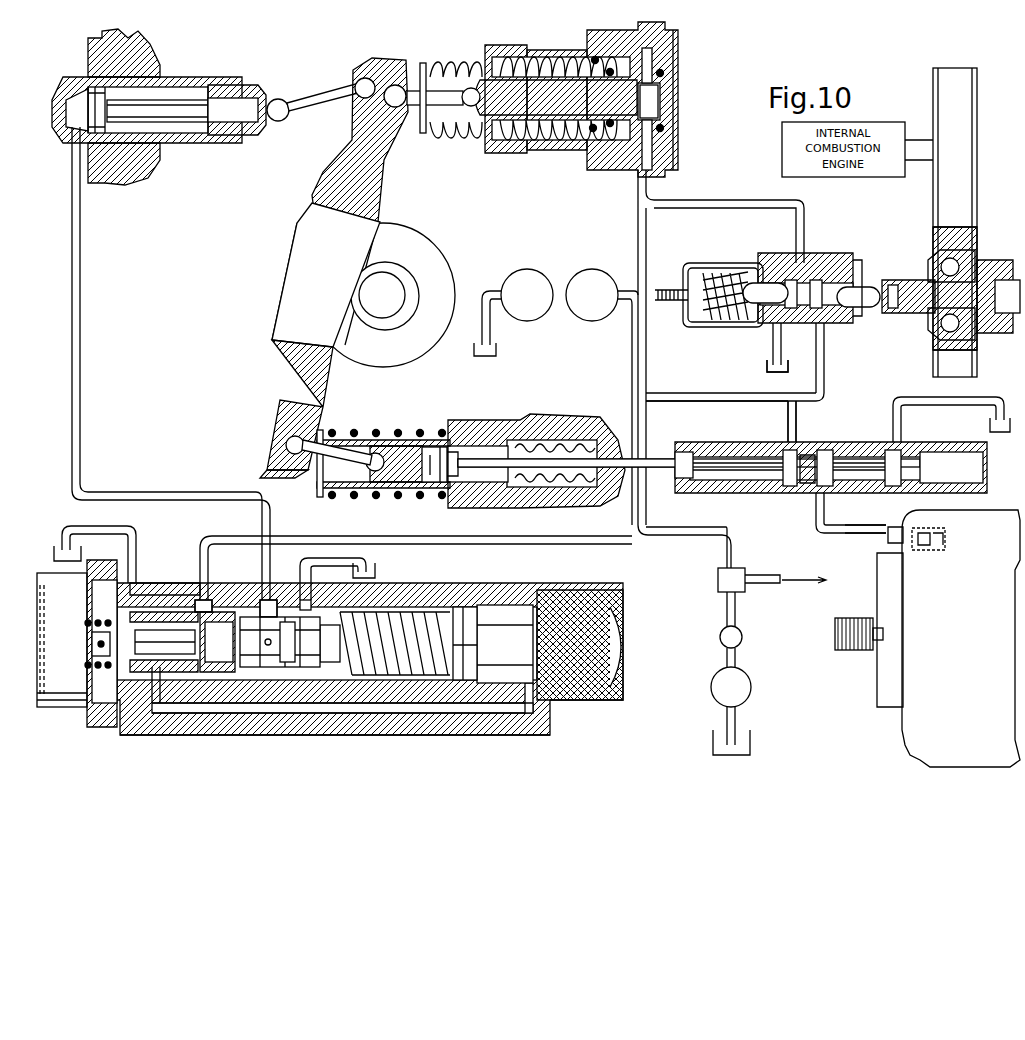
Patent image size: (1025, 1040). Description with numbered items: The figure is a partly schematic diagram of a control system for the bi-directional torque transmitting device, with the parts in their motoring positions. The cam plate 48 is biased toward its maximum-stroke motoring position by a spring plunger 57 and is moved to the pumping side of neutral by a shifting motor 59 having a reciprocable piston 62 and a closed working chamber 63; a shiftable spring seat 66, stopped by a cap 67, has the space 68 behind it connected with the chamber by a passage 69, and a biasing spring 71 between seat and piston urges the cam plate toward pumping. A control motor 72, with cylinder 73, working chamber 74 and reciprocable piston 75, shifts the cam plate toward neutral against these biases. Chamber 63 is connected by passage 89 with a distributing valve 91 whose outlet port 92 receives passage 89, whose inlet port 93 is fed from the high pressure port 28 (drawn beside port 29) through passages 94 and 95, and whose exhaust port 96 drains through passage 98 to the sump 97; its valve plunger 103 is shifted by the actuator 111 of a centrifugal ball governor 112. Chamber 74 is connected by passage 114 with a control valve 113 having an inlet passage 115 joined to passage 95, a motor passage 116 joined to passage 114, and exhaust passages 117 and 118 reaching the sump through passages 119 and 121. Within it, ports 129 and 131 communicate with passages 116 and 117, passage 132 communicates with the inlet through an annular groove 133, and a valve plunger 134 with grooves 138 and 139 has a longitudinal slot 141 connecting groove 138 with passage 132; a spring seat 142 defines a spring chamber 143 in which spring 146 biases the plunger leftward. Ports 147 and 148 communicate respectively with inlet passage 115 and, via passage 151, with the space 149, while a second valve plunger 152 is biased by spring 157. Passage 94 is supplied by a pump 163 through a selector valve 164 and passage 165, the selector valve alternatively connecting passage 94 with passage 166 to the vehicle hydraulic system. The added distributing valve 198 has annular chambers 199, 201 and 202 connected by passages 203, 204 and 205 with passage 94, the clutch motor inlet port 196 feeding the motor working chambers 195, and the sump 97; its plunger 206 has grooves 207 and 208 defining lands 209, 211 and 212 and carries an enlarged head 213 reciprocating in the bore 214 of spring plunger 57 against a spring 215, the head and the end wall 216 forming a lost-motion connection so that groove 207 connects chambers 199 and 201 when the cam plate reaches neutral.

The high pressure port 28 is at (597, 270).
The accumulator 29 is at (528, 270).
The cam plate 48 is at (266, 375).
The spring plunger 57 is at (372, 488).
The shifting motor 59 is at (540, 57).
The reciprocable piston 62 is at (680, 118).
The motor working chamber 63 is at (660, 98).
The shiftable spring seat 66 is at (575, 150).
The cap 67 is at (500, 153).
The space 68 is at (632, 45).
The passage 69 is at (680, 48).
The biasing spring 71 is at (440, 62).
The control motor 72 is at (178, 77).
The cylinder 73 is at (212, 145).
The working chamber 74 is at (97, 112).
The reciprocable piston 75 is at (250, 88).
The passage 89 is at (702, 208).
The distributing valve 91 is at (859, 326).
The outlet port 92 is at (797, 265).
The inlet port 93 is at (822, 320).
The passage 94 is at (682, 393).
The passage 95 is at (638, 352).
The exhaust port 96 is at (787, 322).
The sump 97 is at (496, 352).
The passage 98 is at (772, 352).
The valve plunger 103 is at (855, 287).
The actuator 111 is at (905, 280).
The centrifugal ball governor 112 is at (978, 254).
The control valve 113 is at (464, 581).
The passage 114 is at (80, 272).
The inlet passage 115 is at (166, 600).
The motor passage 116 is at (240, 608).
The exhaust passage 117 is at (290, 600).
The exhaust passage 118 is at (87, 597).
The passage 119 is at (328, 540).
The passage 121 is at (72, 526).
The port 129 is at (267, 660).
The port 131 is at (337, 579).
The passage 132 is at (197, 673).
The annular groove 133 is at (212, 597).
The valve plunger 134 is at (350, 668).
The annular groove 138 is at (383, 711).
The annular groove 139 is at (287, 670).
The longitudinal slot 141 is at (232, 612).
The spring seat 142 is at (535, 600).
The spring chamber 143 is at (430, 673).
The spring 146 is at (403, 612).
The port 147 is at (160, 583).
The port 148 is at (150, 675).
The space 149 is at (497, 625).
The passage 151 is at (377, 714).
The valve plunger 152 is at (241, 711).
The spring 157 is at (85, 669).
The pump 163 is at (711, 691).
The selector valve 164 is at (718, 578).
The passage 165 is at (737, 656).
The passage 166 is at (764, 576).
The motor working chambers 195 is at (918, 550).
The inlet port 196 is at (886, 553).
The distributing valve 198 is at (845, 440).
The annular chamber 199 is at (790, 490).
The annular chamber 201 is at (818, 447).
The annular chamber 202 is at (890, 450).
The passage 203 is at (792, 419).
The passage 204 is at (823, 543).
The passage 205 is at (922, 402).
The valve plunger 206 is at (662, 452).
The annular groove 207 is at (722, 493).
The annular groove 208 is at (851, 495).
The annular land 209 is at (686, 493).
The annular land 211 is at (811, 493).
The annular land 212 is at (930, 469).
The enlarged head 213 is at (445, 447).
The bore 214 is at (435, 482).
The spring 215 is at (545, 445).
The end wall 216 is at (418, 440).